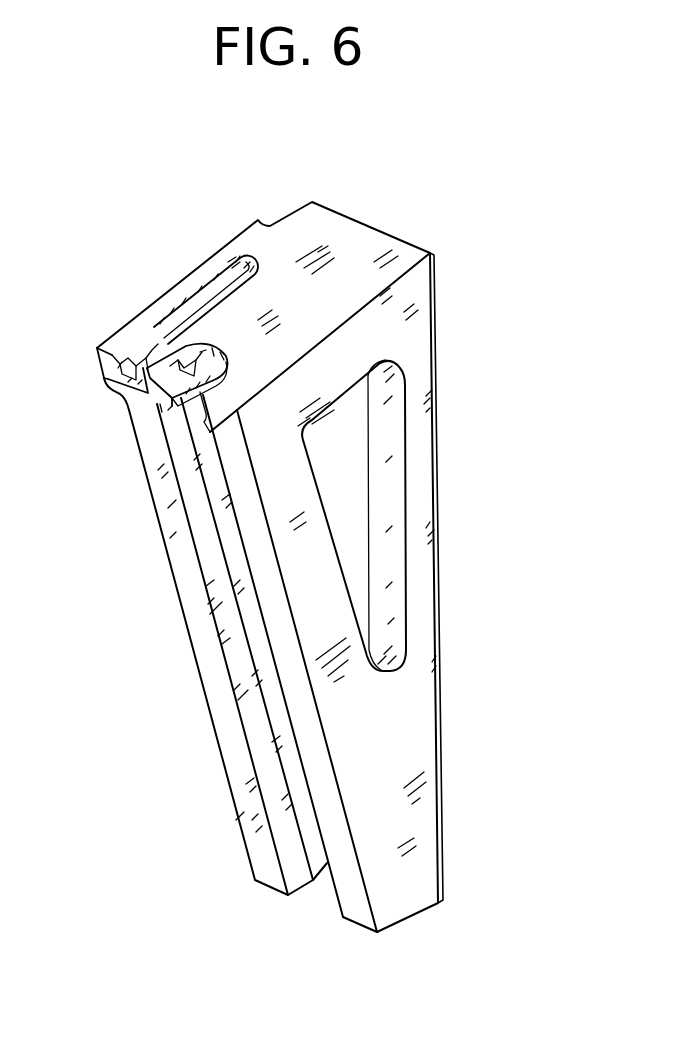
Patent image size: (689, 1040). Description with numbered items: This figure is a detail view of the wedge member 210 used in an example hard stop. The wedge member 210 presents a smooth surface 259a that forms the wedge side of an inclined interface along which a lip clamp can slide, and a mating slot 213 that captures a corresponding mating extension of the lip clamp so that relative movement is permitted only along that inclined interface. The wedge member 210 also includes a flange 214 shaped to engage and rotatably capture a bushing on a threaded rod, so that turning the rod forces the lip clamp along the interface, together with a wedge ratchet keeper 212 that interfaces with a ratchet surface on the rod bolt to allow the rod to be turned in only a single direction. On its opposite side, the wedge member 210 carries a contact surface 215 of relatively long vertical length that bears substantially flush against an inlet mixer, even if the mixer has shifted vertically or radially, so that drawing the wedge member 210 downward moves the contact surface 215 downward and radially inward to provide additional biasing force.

The wedge member 210 is at (157, 930).
The wedge ratchet keeper 212 is at (155, 330).
The mating slot 213 is at (280, 710).
The flange 214 is at (160, 409).
The contact surface 215 is at (440, 553).
The surface 259a is at (190, 585).